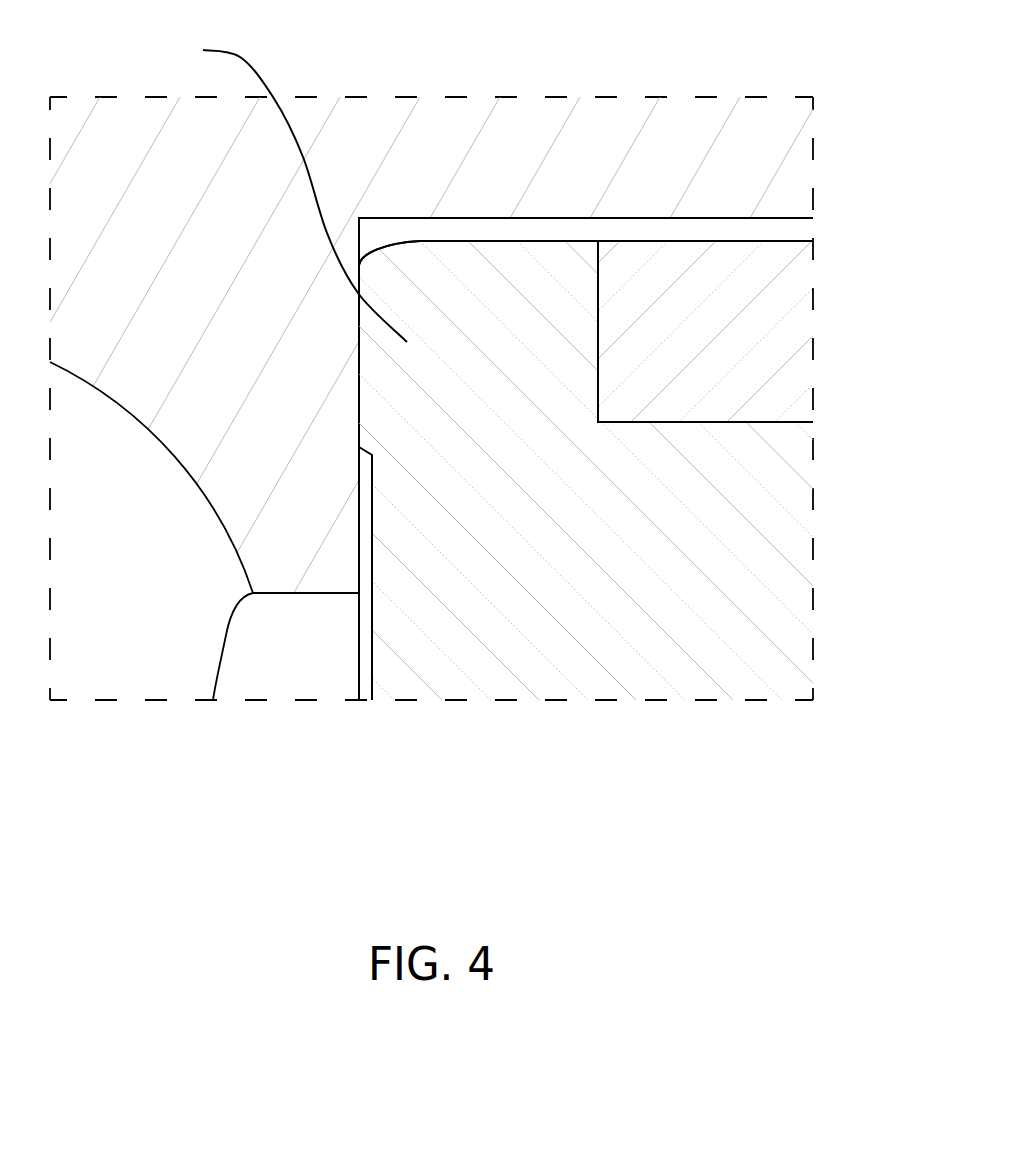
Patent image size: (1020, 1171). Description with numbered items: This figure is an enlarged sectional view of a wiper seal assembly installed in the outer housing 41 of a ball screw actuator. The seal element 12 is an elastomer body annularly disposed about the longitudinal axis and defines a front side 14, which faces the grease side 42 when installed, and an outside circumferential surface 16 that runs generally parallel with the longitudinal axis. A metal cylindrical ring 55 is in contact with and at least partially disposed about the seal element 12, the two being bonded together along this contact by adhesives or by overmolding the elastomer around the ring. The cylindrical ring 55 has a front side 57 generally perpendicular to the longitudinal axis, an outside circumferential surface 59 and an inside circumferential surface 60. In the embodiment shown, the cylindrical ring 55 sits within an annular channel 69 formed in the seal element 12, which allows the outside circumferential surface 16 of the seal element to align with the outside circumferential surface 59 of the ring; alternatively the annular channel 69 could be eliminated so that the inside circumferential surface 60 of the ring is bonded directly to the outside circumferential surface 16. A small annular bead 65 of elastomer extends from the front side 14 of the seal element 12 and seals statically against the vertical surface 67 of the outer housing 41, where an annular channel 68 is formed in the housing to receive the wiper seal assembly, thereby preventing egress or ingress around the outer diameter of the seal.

The seal element 12 is at (603, 650).
The front side 14 is at (370, 655).
The outside circumferential surface 16 is at (565, 243).
The outer housing 41 is at (340, 153).
The grease side 42 is at (143, 600).
The cylindrical ring 55 is at (747, 322).
The front side 57 is at (598, 377).
The outside circumferential surface 59 is at (725, 242).
The inside circumferential surface 60 is at (770, 423).
The annular bead 65 is at (290, 188).
The vertical surface 67 is at (362, 228).
The annular channel 68 is at (478, 230).
The annular channel 69 is at (702, 283).